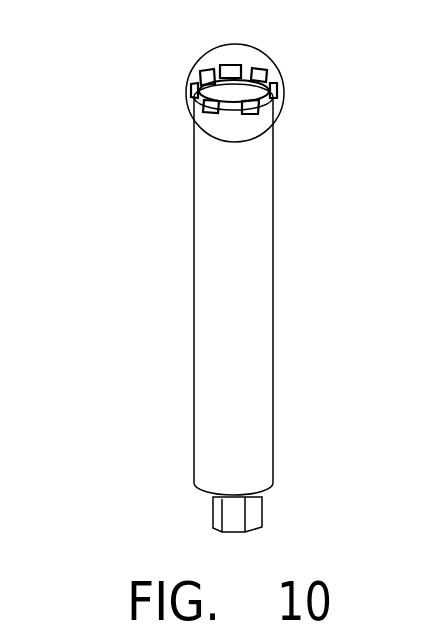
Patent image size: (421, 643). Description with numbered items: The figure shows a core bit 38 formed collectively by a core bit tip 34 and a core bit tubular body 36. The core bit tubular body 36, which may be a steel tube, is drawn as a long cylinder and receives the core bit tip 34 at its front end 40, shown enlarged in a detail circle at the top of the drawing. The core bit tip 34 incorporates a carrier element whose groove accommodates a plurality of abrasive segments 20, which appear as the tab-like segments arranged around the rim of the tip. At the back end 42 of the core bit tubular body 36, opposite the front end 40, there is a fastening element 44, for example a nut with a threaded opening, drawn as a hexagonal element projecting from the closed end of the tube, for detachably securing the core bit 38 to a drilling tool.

The abrasive segments 20 is at (231, 90).
The core bit tip 34 is at (191, 71).
The core bit tubular body 36 is at (194, 263).
The core bit 38 is at (76, 153).
The front end 40 is at (278, 110).
The back end 42 is at (196, 483).
The fastening element 44 is at (228, 515).